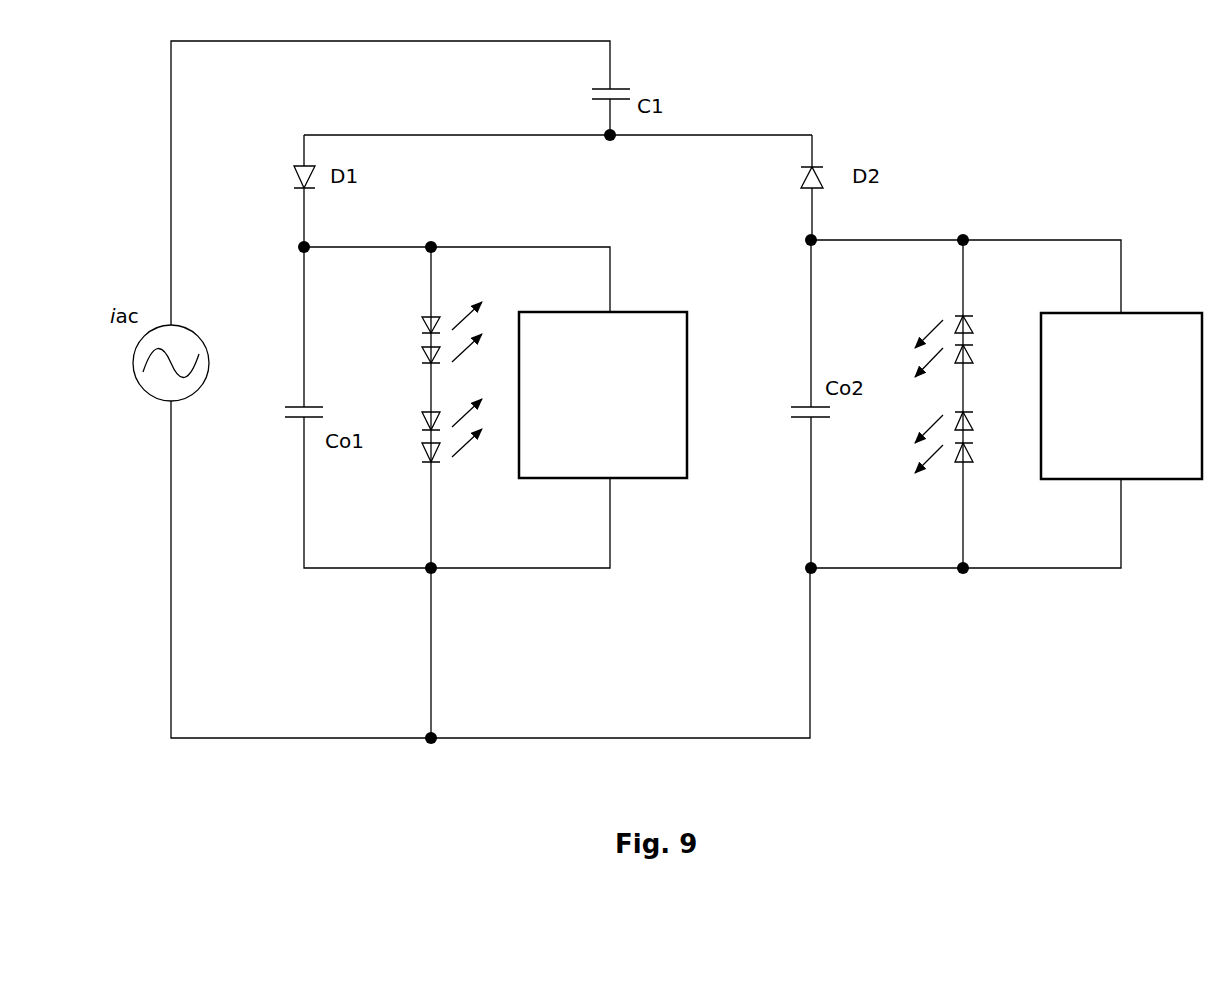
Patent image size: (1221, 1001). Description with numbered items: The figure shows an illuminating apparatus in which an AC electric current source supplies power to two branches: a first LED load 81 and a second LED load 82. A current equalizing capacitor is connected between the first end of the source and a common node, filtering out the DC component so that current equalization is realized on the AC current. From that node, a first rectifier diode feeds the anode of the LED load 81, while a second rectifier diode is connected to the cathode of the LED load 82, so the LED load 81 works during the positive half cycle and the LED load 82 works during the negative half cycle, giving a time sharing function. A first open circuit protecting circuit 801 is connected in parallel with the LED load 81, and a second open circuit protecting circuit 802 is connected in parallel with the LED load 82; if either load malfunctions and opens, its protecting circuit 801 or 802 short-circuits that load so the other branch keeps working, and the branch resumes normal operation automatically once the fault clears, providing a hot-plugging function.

The LED load 81 is at (406, 492).
The LED load 82 is at (985, 404).
The first open circuit protecting circuit 801 is at (603, 395).
The second open circuit protecting circuit 802 is at (1121, 396).